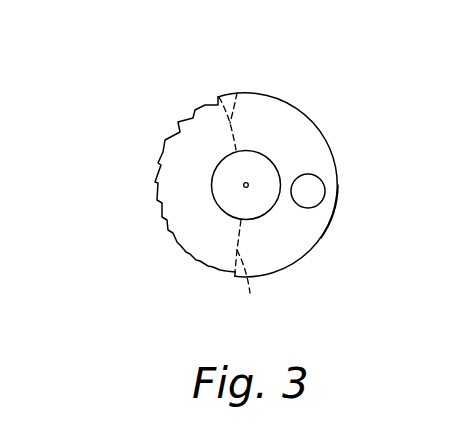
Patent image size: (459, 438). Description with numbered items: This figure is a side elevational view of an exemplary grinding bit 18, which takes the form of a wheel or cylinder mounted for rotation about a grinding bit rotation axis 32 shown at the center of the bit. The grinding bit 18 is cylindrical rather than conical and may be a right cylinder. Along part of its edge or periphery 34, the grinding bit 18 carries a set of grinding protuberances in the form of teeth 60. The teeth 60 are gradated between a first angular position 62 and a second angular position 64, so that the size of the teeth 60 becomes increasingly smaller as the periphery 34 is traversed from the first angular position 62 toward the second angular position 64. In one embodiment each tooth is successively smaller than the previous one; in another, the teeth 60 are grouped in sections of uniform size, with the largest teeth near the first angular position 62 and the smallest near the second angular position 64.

The grinding bit 18 is at (323, 65).
The teeth 60 is at (143, 118).
The grinding bit rotation axis 32 is at (243, 185).
The periphery 34 is at (321, 238).
The first angular position 62 is at (237, 93).
The second angular position 64 is at (251, 296).